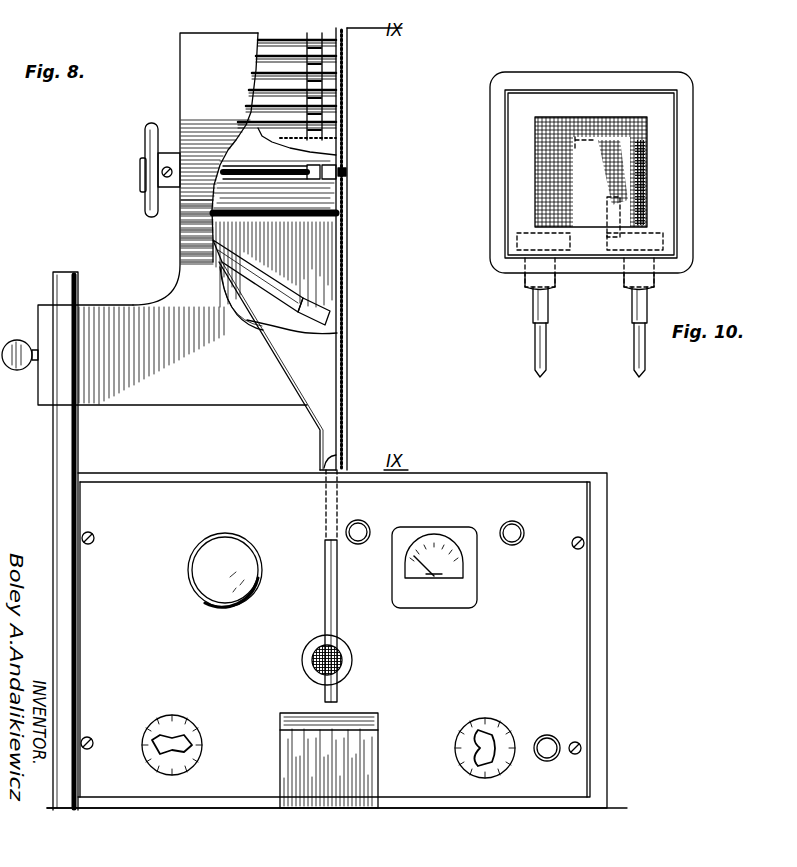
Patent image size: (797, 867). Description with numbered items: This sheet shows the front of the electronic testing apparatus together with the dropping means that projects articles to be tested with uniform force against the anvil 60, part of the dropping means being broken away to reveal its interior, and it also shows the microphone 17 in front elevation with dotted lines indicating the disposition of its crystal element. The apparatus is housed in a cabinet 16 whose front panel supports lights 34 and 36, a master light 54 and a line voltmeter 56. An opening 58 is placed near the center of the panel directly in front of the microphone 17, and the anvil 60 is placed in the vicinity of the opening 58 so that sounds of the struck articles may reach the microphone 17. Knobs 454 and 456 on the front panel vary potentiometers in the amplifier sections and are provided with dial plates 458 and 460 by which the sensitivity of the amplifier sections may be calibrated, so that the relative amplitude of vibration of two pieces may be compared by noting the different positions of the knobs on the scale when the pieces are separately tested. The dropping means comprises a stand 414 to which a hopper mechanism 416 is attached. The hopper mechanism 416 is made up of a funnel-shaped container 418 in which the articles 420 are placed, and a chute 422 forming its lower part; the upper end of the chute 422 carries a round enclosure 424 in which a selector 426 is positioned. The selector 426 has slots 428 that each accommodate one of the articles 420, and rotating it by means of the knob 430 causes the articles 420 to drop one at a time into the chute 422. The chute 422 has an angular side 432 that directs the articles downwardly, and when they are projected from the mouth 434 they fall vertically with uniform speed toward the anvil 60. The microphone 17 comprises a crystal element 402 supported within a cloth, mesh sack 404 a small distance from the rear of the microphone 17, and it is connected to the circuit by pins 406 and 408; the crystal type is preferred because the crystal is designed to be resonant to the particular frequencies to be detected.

In FIG. 8, the funnel-shaped container 418 is at (192, 98).
In FIG. 8, the knob 430 is at (146, 141).
In FIG. 8, the round enclosure 424 is at (178, 211).
In FIG. 8, the chute 422 is at (330, 251).
In FIG. 8, the articles 420 is at (330, 76).
In FIG. 8, the slots 428 is at (348, 190).
In FIG. 8, the selector 426 is at (348, 192).
In FIG. 8, the angular side 432 is at (258, 328).
In FIG. 8, the hopper mechanism 416 is at (154, 350).
In FIG. 8, the stand 414 is at (58, 438).
In FIG. 8, the mouth 434 is at (335, 462).
In FIG. 8, the cabinet 16 is at (600, 604).
In FIG. 8, the master light 54 is at (258, 559).
In FIG. 8, the light 36 is at (360, 531).
In FIG. 8, the line voltmeter 56 is at (436, 533).
In FIG. 8, the light 34 is at (522, 531).
In FIG. 8, the opening 58 is at (350, 660).
In FIG. 8, the dial plate 458 is at (163, 731).
In FIG. 8, the knob 454 is at (175, 737).
In FIG. 8, the knob 456 is at (495, 738).
In FIG. 8, the dial plate 460 is at (478, 735).
In FIG. 8, the anvil 60 is at (329, 760).
In FIG. 10, the microphone 17 is at (633, 75).
In FIG. 10, the crystal element 402 is at (650, 122).
In FIG. 10, the cloth mesh sack 404 is at (645, 165).
In FIG. 10, the pin 406 is at (548, 367).
In FIG. 10, the pin 408 is at (647, 367).